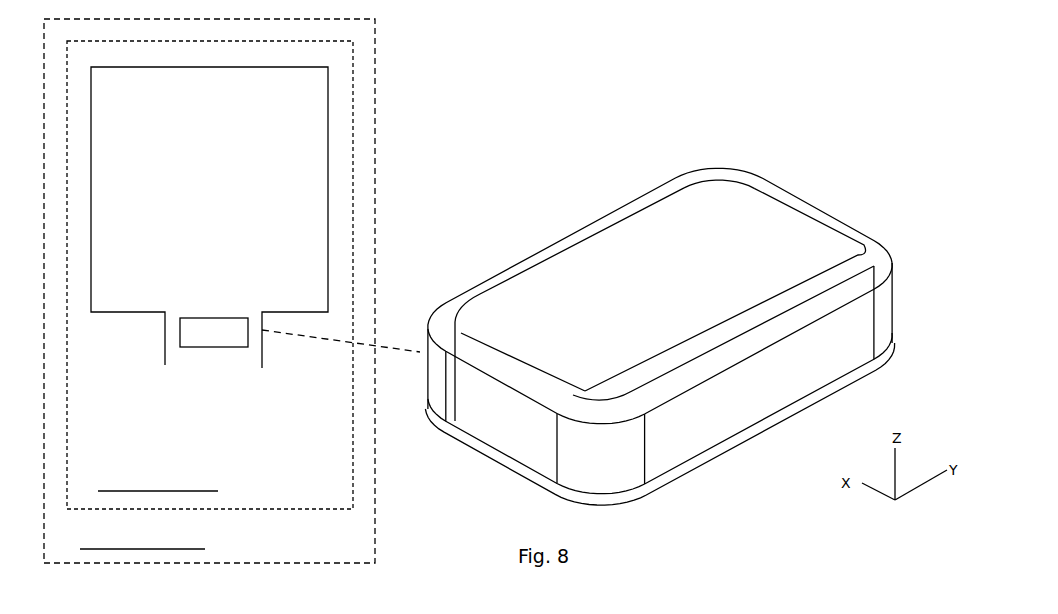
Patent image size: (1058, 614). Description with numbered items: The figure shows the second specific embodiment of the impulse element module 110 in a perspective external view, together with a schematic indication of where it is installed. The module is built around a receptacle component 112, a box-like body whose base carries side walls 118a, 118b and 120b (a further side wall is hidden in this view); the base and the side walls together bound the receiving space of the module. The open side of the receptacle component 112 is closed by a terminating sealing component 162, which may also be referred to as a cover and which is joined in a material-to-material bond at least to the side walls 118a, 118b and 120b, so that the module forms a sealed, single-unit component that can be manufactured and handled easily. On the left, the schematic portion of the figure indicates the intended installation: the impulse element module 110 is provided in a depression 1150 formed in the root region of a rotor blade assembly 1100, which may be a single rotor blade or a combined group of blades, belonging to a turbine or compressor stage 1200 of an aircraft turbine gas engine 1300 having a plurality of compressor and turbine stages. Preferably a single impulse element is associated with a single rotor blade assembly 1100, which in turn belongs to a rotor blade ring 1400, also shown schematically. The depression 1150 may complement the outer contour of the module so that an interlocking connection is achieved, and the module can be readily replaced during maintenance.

The impulse element module 110 is at (460, 232).
The receptacle component 112 is at (584, 268).
The side wall 118a is at (822, 212).
The side wall 118b is at (492, 423).
The side wall 120b is at (653, 253).
The sealing component 162 is at (790, 383).
The rotor blade assembly 1100 is at (295, 104).
The depression 1150 is at (193, 328).
The turbine or compressor stage 1200 is at (332, 477).
The aircraft turbine gas engine 1300 is at (348, 543).
The rotor blade ring 1400 is at (248, 358).